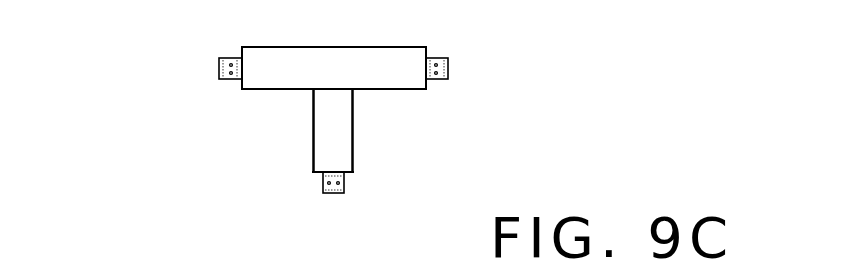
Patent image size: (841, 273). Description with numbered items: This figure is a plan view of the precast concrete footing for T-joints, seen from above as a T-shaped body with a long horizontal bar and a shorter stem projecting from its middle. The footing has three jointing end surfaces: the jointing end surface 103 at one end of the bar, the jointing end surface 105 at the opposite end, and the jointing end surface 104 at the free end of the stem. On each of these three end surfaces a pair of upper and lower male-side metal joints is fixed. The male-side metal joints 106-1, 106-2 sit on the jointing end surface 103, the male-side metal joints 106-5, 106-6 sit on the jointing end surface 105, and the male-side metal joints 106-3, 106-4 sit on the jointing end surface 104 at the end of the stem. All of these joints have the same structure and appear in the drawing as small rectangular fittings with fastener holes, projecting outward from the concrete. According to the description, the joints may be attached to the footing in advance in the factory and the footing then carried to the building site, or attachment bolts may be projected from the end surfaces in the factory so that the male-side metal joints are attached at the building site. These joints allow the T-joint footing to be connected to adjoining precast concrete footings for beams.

The jointing end surface 103 is at (428, 48).
The jointing end surface 104 is at (350, 174).
The jointing end surface 105 is at (241, 49).
The male-side metal joint 106-1 is at (530, 88).
The male-side metal joint 106-2 is at (448, 72).
The male-side metal joint 106-3 is at (240, 205).
The male-side metal joint 106-4 is at (322, 192).
The male-side metal joint 106-5 is at (141, 101).
The male-side metal joint 106-6 is at (218, 72).